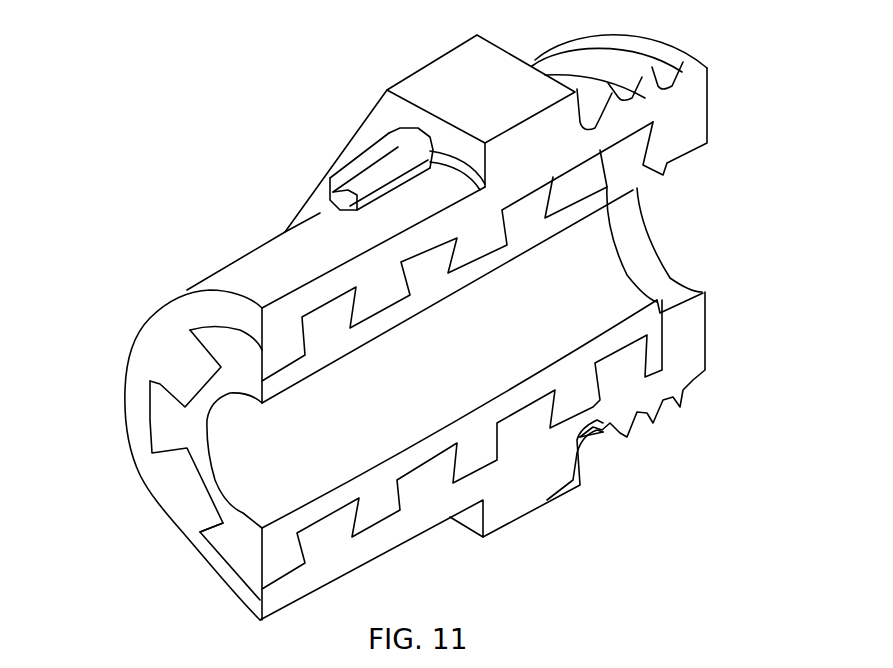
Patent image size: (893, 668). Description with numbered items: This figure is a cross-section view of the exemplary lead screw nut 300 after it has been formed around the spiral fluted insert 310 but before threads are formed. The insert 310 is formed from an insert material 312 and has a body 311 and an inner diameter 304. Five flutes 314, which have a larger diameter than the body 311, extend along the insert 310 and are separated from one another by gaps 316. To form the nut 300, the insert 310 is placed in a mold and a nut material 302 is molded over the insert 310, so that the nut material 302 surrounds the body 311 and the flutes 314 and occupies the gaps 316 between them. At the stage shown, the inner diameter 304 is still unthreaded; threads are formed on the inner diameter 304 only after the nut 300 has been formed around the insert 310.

The lead screw nut 300 is at (138, 125).
The nut material 302 is at (687, 107).
The inner diameter 304 is at (234, 438).
The spiral fluted insert 310 is at (172, 333).
The body 311 is at (207, 392).
The insert material 312 is at (627, 175).
The flutes 314 is at (230, 548).
The gaps 316 is at (183, 493).